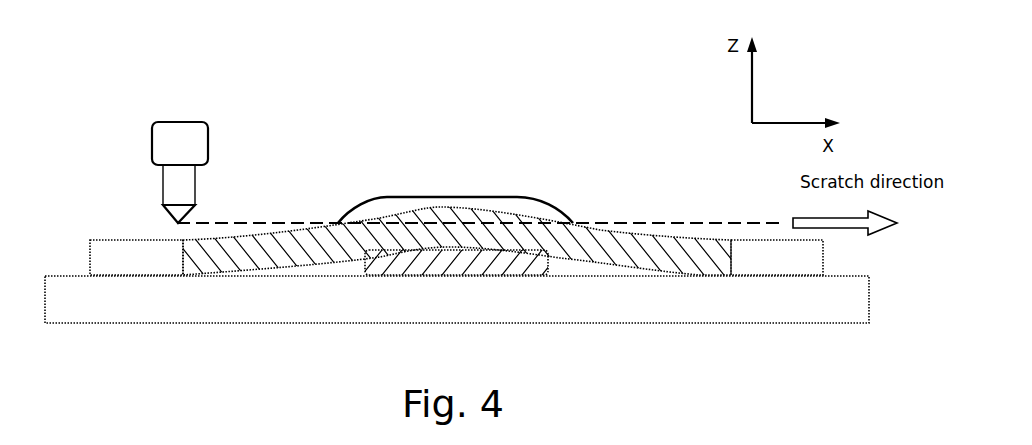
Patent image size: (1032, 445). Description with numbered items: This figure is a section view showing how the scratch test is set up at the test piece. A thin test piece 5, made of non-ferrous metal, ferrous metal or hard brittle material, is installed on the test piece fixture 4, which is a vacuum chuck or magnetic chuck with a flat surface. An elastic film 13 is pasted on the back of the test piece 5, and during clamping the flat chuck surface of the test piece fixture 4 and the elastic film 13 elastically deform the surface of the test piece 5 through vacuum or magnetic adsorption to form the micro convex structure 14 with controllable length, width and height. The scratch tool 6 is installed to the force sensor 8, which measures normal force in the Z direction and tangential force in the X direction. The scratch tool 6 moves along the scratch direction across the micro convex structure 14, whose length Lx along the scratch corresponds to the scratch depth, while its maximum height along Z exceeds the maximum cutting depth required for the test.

The test piece fixture 4 is at (299, 298).
The test piece 5 is at (752, 262).
The scratch tool 6 is at (182, 210).
The force sensor 8 is at (180, 143).
The elastic film 13 is at (390, 262).
The micro convex structure 14 is at (477, 231).